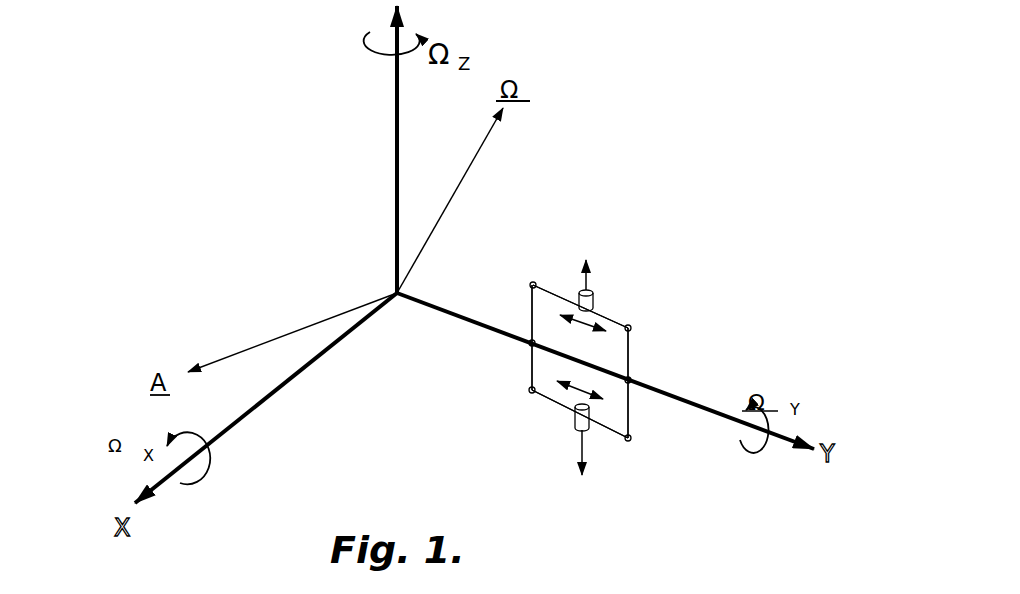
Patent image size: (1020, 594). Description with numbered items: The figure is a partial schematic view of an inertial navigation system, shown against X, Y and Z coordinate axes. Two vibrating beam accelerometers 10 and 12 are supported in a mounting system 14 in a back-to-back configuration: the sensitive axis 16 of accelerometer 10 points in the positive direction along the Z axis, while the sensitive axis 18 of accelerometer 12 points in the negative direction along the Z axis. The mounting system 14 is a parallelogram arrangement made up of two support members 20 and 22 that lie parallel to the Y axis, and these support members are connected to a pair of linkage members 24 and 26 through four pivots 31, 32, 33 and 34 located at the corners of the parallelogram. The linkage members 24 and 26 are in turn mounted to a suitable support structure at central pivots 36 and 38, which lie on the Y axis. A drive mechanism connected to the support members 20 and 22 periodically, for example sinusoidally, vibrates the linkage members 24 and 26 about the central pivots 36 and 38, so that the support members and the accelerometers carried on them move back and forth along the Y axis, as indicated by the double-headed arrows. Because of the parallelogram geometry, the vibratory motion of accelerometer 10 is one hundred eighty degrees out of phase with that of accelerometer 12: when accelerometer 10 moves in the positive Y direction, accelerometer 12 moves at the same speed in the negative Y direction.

The vibrating beam accelerometer 10 is at (597, 298).
The vibrating beam accelerometer 12 is at (574, 419).
The mounting system 14 is at (672, 311).
The sensitive axis 16 is at (589, 277).
The sensitive axis 18 is at (579, 460).
The support member 20 is at (612, 322).
The support member 22 is at (615, 434).
The linkage member 24 is at (530, 313).
The linkage member 26 is at (631, 353).
The pivot 31 is at (533, 282).
The pivot 32 is at (632, 329).
The pivot 33 is at (529, 390).
The pivot 34 is at (631, 440).
The central pivot 36 is at (529, 343).
The central pivot 38 is at (632, 380).